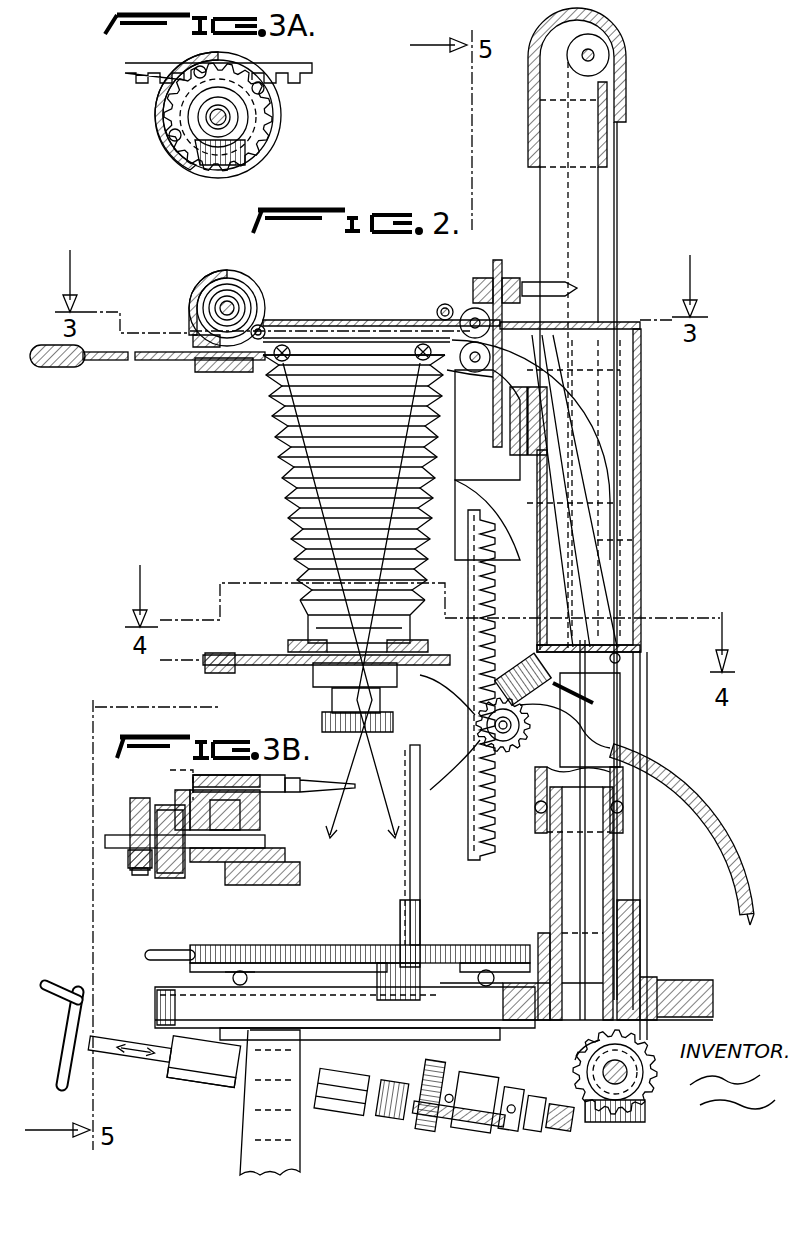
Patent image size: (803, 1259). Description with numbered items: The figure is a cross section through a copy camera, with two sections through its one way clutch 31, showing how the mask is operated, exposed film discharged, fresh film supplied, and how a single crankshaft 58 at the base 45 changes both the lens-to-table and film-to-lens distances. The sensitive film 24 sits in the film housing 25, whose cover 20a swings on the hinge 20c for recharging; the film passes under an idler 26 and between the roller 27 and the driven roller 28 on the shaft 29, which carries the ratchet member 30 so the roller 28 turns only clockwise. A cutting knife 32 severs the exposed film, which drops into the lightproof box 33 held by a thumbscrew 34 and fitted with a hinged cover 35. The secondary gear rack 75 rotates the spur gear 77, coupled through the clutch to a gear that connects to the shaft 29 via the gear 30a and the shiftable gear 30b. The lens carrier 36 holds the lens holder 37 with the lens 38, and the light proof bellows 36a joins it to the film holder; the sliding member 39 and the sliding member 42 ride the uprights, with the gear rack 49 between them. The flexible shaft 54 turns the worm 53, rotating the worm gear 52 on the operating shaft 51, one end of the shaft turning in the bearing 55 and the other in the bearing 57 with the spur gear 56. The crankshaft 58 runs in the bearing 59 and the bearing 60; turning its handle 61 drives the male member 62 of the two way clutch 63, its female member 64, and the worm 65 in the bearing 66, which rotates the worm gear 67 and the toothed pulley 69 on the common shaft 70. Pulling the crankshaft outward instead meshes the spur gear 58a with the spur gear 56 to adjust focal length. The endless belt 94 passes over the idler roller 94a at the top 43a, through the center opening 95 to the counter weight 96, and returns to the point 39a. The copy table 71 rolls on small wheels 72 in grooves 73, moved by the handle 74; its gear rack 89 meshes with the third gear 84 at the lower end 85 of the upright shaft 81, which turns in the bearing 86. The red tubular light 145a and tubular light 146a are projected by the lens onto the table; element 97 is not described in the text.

In FIG. 3A, the secondary gear rack 75 is at (312, 70).
In FIG. 3B, the secondary gear rack 75 is at (130, 800).
In FIG. 3A, the ratchet member 30 is at (160, 120).
In FIG. 3A, the roller 28 is at (268, 122).
In FIG. 2, the roller 28 is at (460, 323).
In FIG. 3A, the one way clutch 31 is at (170, 140).
In FIG. 3B, the one way clutch 31 is at (165, 878).
In FIG. 3A, the shaft 29 is at (210, 128).
In FIG. 2, the shaft 29 is at (490, 350).
In FIG. 3B, the shaft 29 is at (105, 842).
In FIG. 2, the top of the upright 43a is at (600, 10).
In FIG. 2, the idler roller 94a is at (595, 48).
In FIG. 2, the lightproof box 33 is at (570, 322).
In FIG. 2, the cover 35 is at (641, 480).
In FIG. 2, the belt attachment point 39a is at (620, 350).
In FIG. 2, the center opening 95 is at (620, 432).
In FIG. 2, the counter weight 96 is at (620, 537).
In FIG. 2, the cable 97 is at (560, 395).
In FIG. 2, the cutting knife 32 is at (500, 258).
In FIG. 2, the thumbscrew 34 is at (560, 280).
In FIG. 2, the film housing 25 is at (200, 282).
In FIG. 2, the sensitive film 24 is at (240, 300).
In FIG. 2, the idler 26 is at (265, 338).
In FIG. 2, the cover 20a is at (330, 318).
In FIG. 2, the hinge 20c is at (440, 315).
In FIG. 2, the roller 27 is at (450, 305).
In FIG. 2, the tubular light 145a is at (255, 372).
In FIG. 2, the tubular light 146a is at (415, 358).
In FIG. 2, the light proof bellows 36a is at (275, 478).
In FIG. 2, the sliding member 39 is at (455, 470).
In FIG. 2, the gear rack 49 is at (495, 595).
In FIG. 2, the lens carrier 36 is at (300, 640).
In FIG. 2, the lens holder 37 is at (270, 665).
In FIG. 2, the lens 38 is at (332, 700).
In FIG. 2, the sliding member 42 is at (375, 735).
In FIG. 2, the worm 53 is at (505, 680).
In FIG. 2, the bearing 55 is at (600, 690).
In FIG. 2, the flexible shaft 54 is at (660, 740).
In FIG. 2, the worm gear 52 is at (487, 742).
In FIG. 2, the operating shaft 51 is at (550, 760).
In FIG. 2, the upright shaft 81 is at (420, 885).
In FIG. 2, the endless belt 94 is at (648, 905).
In FIG. 2, the lower end of shaft 85 is at (420, 940).
In FIG. 2, the gear rack 89 is at (330, 945).
In FIG. 2, the copy table 71 is at (240, 935).
In FIG. 2, the handle 74 is at (170, 950).
In FIG. 2, the small wheels 72 is at (235, 985).
In FIG. 2, the grooves 73 is at (300, 1005).
In FIG. 2, the third gear 84 is at (389, 990).
In FIG. 2, the bearing 86 is at (486, 986).
In FIG. 2, the base 45 is at (155, 990).
In FIG. 2, the common shaft 70 is at (640, 1000).
In FIG. 2, the worm gear 67 is at (640, 1060).
In FIG. 2, the toothed pulley 69 is at (580, 1055).
In FIG. 2, the worm 65 is at (645, 1110).
In FIG. 2, the handle 61 is at (85, 985).
In FIG. 2, the crankshaft 58 is at (130, 1068).
In FIG. 2, the bearing 59 is at (205, 1082).
In FIG. 2, the spur gear 56 is at (395, 1090).
In FIG. 2, the male member 62 is at (510, 1082).
In FIG. 2, the spur gear 58a is at (433, 1025).
In FIG. 2, the bearing 60 is at (480, 1032).
In FIG. 2, the two way clutch 63 is at (520, 1040).
In FIG. 2, the female member 64 is at (540, 1079).
In FIG. 2, the bearing 66 is at (568, 1142).
In FIG. 2, the bearing 57 is at (300, 1150).
In FIG. 3B, the gear 30b is at (200, 775).
In FIG. 3B, the spur gear 77 is at (135, 875).
In FIG. 3B, the gear 30a is at (235, 903).